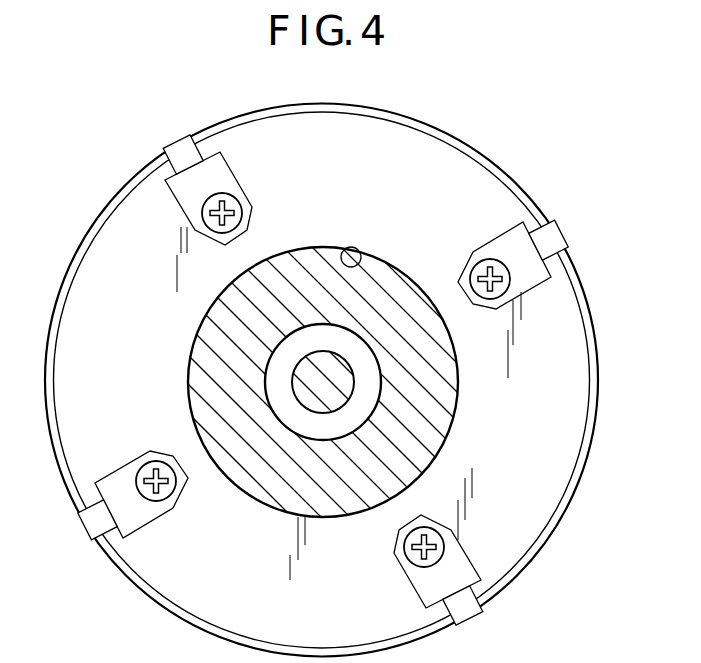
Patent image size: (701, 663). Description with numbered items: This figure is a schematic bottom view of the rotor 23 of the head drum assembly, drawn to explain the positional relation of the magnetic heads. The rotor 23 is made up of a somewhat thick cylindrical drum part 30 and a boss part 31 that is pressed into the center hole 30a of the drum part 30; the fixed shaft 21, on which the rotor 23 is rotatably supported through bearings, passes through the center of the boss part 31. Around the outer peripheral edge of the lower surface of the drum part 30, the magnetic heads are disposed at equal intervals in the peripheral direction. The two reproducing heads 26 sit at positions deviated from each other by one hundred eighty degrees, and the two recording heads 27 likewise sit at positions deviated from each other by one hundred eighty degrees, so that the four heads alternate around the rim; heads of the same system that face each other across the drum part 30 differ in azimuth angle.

The fixed shaft 21 is at (304, 381).
The rotor 23 is at (422, 158).
The reproducing heads 26 is at (185, 150).
The recording heads 27 is at (555, 243).
The drum part 30 is at (236, 121).
The center hole 30a is at (355, 248).
The boss part 31 is at (438, 422).